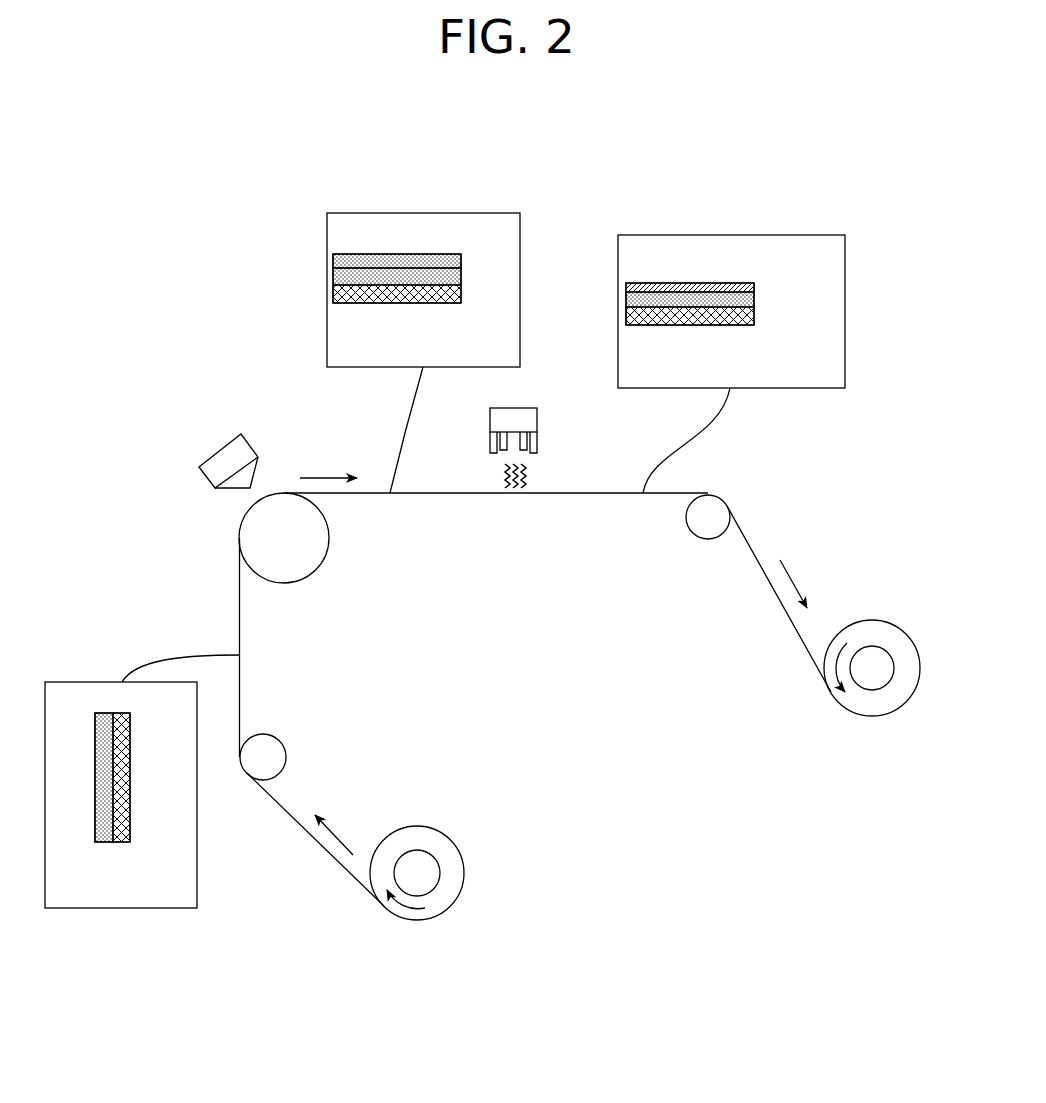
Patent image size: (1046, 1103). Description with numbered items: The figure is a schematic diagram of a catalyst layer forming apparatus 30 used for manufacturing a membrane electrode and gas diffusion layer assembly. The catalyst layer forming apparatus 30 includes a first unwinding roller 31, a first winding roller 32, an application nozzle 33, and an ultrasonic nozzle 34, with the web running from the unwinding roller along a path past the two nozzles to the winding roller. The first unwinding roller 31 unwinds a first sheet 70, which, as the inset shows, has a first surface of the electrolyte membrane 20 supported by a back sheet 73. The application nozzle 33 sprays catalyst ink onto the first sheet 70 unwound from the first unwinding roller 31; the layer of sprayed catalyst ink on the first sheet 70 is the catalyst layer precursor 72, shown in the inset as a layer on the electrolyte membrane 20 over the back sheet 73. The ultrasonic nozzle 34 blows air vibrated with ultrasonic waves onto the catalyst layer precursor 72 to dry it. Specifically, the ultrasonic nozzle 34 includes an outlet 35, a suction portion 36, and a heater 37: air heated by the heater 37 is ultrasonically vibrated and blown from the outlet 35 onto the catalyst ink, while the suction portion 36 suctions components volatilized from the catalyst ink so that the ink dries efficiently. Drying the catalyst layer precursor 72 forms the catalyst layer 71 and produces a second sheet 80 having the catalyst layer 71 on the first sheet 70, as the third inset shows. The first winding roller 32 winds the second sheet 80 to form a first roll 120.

The catalyst layer forming apparatus 30 is at (243, 200).
The first unwinding roller 31 is at (417, 873).
The first winding roller 32 is at (872, 668).
The first roll 120 is at (872, 620).
The application nozzle 33 is at (258, 466).
The ultrasonic nozzle 34 is at (556, 410).
The outlet 35 is at (526, 456).
The suction portion 36 is at (494, 455).
The heater 37 is at (492, 420).
The electrolyte membrane 20 is at (461, 285).
The first sheet 70 is at (153, 750).
The catalyst layer 71 is at (672, 283).
The catalyst layer precursor 72 is at (388, 254).
The back sheet 73 is at (399, 303).
The second sheet 80 is at (780, 353).